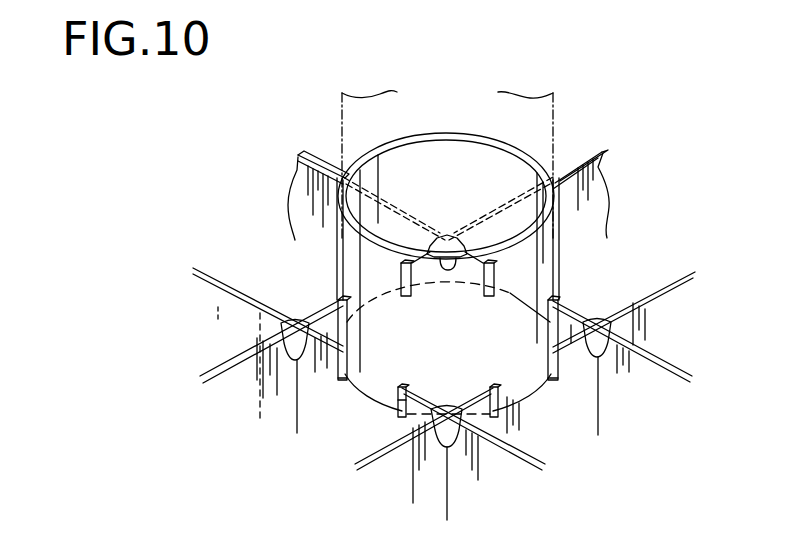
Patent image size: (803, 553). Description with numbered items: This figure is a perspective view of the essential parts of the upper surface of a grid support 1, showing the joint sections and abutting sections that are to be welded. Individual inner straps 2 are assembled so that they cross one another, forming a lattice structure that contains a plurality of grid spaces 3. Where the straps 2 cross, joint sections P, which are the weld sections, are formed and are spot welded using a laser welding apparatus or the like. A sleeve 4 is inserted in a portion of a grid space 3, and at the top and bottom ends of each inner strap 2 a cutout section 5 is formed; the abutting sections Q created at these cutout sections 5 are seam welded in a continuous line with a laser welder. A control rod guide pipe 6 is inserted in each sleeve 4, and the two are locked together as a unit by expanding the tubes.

The grid support 1 is at (279, 163).
The inner strap 2 is at (653, 288).
The grid space 3 is at (295, 273).
The sleeve 4 is at (560, 228).
The cutout section 5 is at (360, 384).
The control rod guide pipe 6 is at (555, 135).
The joint section P is at (280, 323).
The abutting section Q is at (340, 380).